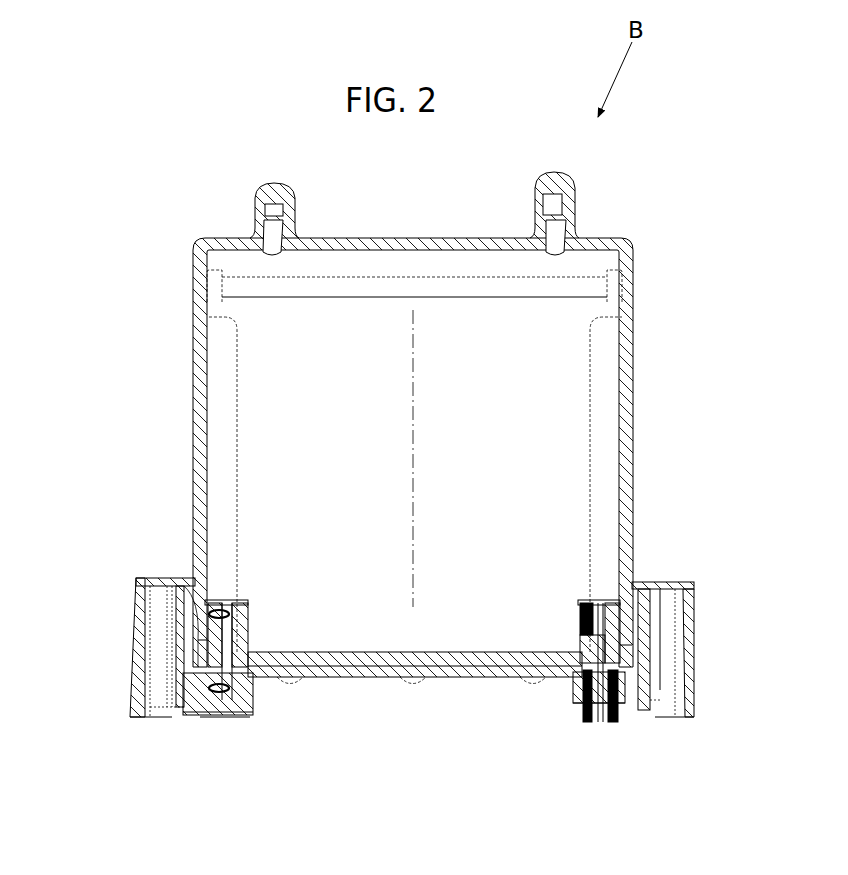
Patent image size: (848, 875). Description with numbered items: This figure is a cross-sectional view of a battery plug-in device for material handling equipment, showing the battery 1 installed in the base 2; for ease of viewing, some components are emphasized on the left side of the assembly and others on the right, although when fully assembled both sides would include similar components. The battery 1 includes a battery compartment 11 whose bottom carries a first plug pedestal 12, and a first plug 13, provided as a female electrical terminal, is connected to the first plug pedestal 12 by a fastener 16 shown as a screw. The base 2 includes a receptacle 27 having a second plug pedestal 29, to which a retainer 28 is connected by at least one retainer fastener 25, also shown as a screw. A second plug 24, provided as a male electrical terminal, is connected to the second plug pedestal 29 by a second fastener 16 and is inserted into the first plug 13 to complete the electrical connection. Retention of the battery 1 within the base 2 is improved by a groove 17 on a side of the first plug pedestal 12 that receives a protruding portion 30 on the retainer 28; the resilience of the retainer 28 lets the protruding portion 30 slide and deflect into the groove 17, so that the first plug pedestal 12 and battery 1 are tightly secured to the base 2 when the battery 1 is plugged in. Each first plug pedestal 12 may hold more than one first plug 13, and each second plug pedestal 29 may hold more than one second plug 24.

The battery 1 is at (193, 425).
The battery compartment 11 is at (277, 430).
The base 2 is at (133, 622).
The first plug pedestal 12 is at (223, 612).
The first plug 13 is at (222, 632).
The protruding portion 30 is at (210, 640).
The groove 17 is at (213, 650).
The second plug 24 is at (208, 673).
The fastener 16 is at (208, 687).
The retainer 28 is at (203, 713).
The second plug pedestal 29 is at (233, 710).
The receptacle 27 is at (658, 638).
The retainer fastener 25 is at (587, 713).